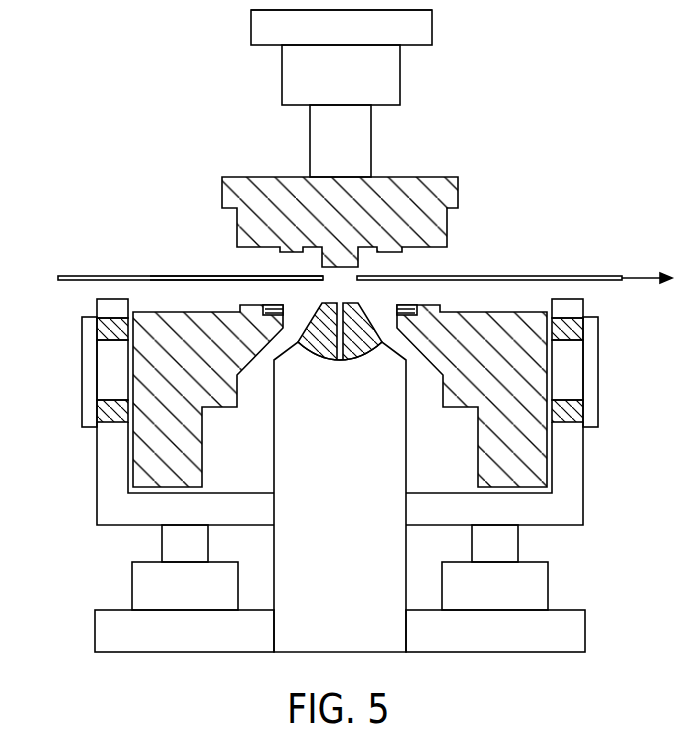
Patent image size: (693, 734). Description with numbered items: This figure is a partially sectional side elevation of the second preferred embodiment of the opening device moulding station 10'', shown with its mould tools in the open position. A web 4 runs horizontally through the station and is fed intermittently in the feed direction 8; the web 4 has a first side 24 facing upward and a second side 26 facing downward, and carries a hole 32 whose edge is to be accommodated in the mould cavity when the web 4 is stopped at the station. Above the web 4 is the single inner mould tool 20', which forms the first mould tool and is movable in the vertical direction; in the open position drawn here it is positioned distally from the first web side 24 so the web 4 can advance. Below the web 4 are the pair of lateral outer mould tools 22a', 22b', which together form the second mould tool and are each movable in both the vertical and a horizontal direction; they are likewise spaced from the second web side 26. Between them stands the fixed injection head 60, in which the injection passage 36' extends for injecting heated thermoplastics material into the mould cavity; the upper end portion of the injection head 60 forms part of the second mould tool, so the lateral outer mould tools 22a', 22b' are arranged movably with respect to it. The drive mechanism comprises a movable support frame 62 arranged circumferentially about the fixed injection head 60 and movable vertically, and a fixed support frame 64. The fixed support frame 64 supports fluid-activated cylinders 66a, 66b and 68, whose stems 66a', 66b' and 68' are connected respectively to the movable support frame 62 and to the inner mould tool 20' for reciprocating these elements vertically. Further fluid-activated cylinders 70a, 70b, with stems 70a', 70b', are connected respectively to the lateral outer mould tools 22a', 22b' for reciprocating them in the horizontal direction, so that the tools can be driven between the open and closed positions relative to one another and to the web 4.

The opening device moulding station 10'' is at (301, 38).
The fixed support frame 64 is at (417, 25).
The fluid-activated cylinder 68 is at (341, 75).
The stem 68' is at (340, 141).
The inner mould tool 20' is at (340, 196).
The web 4 is at (88, 276).
The feed direction 8 is at (636, 277).
The first side of web 24 is at (181, 270).
The second side of web 26 is at (202, 287).
The hole 32 is at (333, 286).
The injection passage 36' is at (340, 363).
The fixed injection head 60 is at (330, 528).
The movable support frame 62 is at (573, 510).
The lateral outer mould tool 22b' is at (208, 396).
The lateral outer mould tool 22a' is at (472, 396).
The fluid-activated cylinder 70b is at (58, 372).
The stem 70b' is at (76, 360).
The fluid-activated cylinder 70a is at (619, 372).
The stem 70a' is at (605, 360).
The fluid-activated cylinder 66b is at (185, 586).
The stem 66b' is at (143, 547).
The fluid-activated cylinder 66a is at (495, 586).
The stem 66a' is at (529, 543).